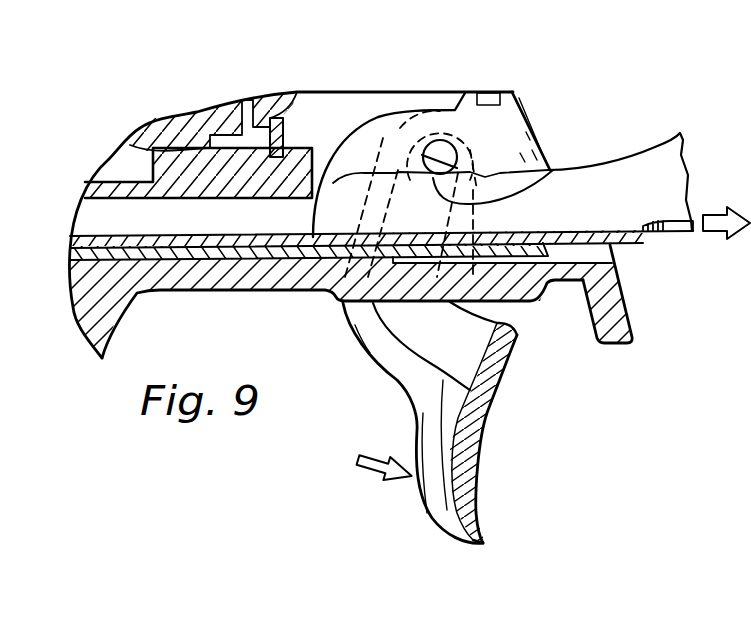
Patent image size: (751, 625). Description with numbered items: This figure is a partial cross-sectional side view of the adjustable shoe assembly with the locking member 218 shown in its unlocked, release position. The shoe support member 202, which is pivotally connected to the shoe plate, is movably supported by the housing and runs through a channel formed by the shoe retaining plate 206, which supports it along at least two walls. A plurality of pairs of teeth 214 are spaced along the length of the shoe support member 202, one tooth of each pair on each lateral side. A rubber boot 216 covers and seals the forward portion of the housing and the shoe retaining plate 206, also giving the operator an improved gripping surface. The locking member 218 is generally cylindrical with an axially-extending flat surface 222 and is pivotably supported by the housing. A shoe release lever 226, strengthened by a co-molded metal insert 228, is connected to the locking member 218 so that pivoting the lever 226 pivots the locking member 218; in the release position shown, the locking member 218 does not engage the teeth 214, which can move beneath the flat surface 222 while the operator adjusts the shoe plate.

The shoe support member 202 is at (658, 210).
The shoe retaining plate 206 is at (541, 265).
The teeth 214 is at (409, 158).
The rubber boot 216 is at (612, 314).
The locking member 218 is at (446, 143).
The flat surface 222 is at (550, 168).
The shoe release lever 226 is at (463, 472).
The metal insert 228 is at (403, 327).